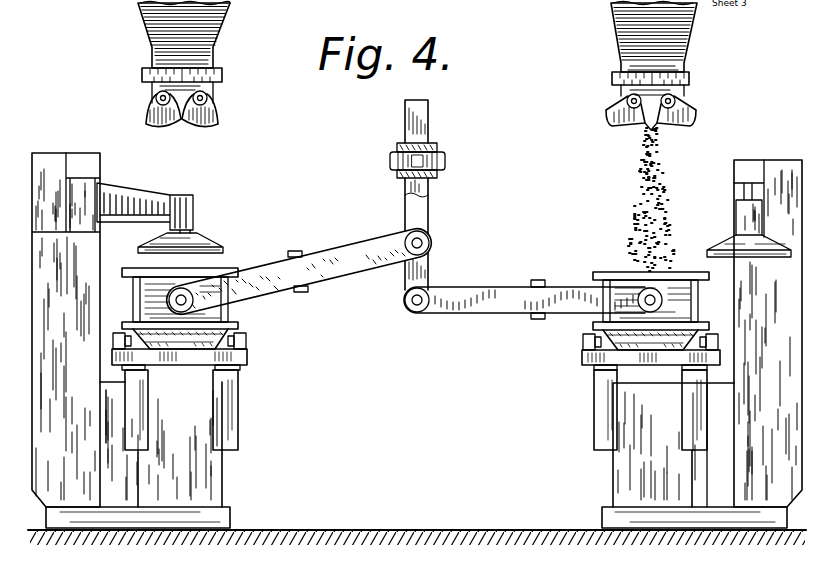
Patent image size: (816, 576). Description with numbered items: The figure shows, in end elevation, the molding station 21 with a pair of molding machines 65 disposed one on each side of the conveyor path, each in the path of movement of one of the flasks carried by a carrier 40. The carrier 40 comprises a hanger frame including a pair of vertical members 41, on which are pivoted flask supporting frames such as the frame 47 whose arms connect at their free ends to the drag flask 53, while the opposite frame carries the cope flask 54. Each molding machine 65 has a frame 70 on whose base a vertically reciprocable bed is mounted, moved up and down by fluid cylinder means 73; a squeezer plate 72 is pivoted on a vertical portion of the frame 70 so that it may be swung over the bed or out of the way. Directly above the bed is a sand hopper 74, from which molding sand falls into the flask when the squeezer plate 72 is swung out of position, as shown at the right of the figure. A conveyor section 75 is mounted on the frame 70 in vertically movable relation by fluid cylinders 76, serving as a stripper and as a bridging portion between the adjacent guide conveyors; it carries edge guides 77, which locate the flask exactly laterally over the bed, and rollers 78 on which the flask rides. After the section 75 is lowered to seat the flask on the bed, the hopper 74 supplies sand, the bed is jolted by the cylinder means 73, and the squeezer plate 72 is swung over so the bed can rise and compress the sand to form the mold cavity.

The molding station 21 is at (186, 333).
The carrier 40 is at (435, 222).
The vertical member 41 is at (430, 118).
The flask supporting frame 47 is at (502, 309).
The drag flask 53 is at (613, 278).
The cope flask 54 is at (212, 268).
The molding machine 65 is at (434, 371).
The frame 70 is at (65, 442).
The squeezer plate 72 is at (196, 236).
The fluid cylinder means 73 is at (215, 478).
The sand hopper 74 is at (222, 40).
The conveyor section 75 is at (247, 346).
The fluid cylinder 76 is at (226, 426).
The edge guide 77 is at (239, 338).
The roller 78 is at (227, 350).